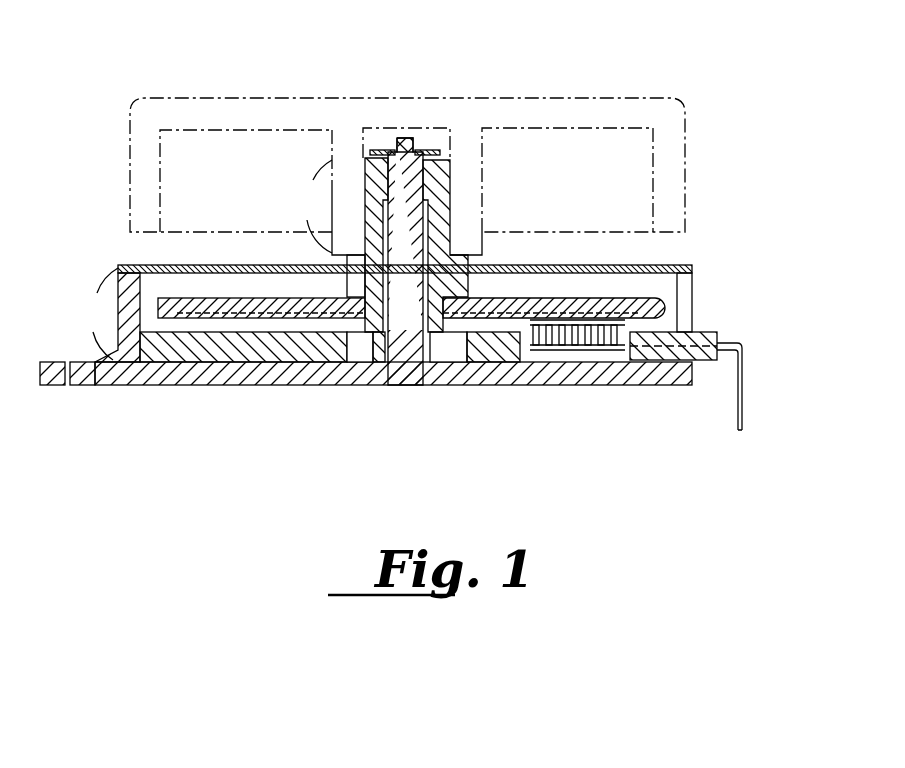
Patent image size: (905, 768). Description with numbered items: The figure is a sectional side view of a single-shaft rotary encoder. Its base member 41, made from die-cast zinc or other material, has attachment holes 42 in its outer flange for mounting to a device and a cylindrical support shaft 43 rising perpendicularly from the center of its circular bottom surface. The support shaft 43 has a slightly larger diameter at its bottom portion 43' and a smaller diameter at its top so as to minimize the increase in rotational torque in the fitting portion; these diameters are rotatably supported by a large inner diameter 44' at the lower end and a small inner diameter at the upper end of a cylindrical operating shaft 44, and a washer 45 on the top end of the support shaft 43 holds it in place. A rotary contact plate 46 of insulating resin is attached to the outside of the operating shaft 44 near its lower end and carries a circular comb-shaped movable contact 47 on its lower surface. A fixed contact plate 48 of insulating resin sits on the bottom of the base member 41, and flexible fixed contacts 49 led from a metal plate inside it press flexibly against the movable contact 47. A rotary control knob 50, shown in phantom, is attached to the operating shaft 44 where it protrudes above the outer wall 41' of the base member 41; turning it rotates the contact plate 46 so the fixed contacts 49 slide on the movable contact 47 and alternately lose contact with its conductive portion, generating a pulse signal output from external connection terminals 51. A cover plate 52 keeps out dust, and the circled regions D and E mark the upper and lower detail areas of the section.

The base member 41 is at (393, 370).
The outer wall 41' is at (732, 282).
The attachment holes 42 is at (78, 385).
The cylindrical support shaft 43 is at (468, 234).
The bottom portion 43' is at (414, 399).
The cylindrical operating shaft 44 is at (375, 191).
The large inner diameter 44' is at (360, 401).
The washer 45 is at (423, 148).
The rotary contact plate 46 is at (640, 297).
The circular comb-shaped movable contact 47 is at (617, 315).
The fixed contact plate 48 is at (503, 357).
The flexible fixed contacts 49 is at (628, 352).
The rotary control knob 50 is at (670, 147).
The external connection terminals 51 is at (743, 400).
The cover plate 52 is at (592, 265).
The detail region D is at (317, 206).
The detail region E is at (104, 314).